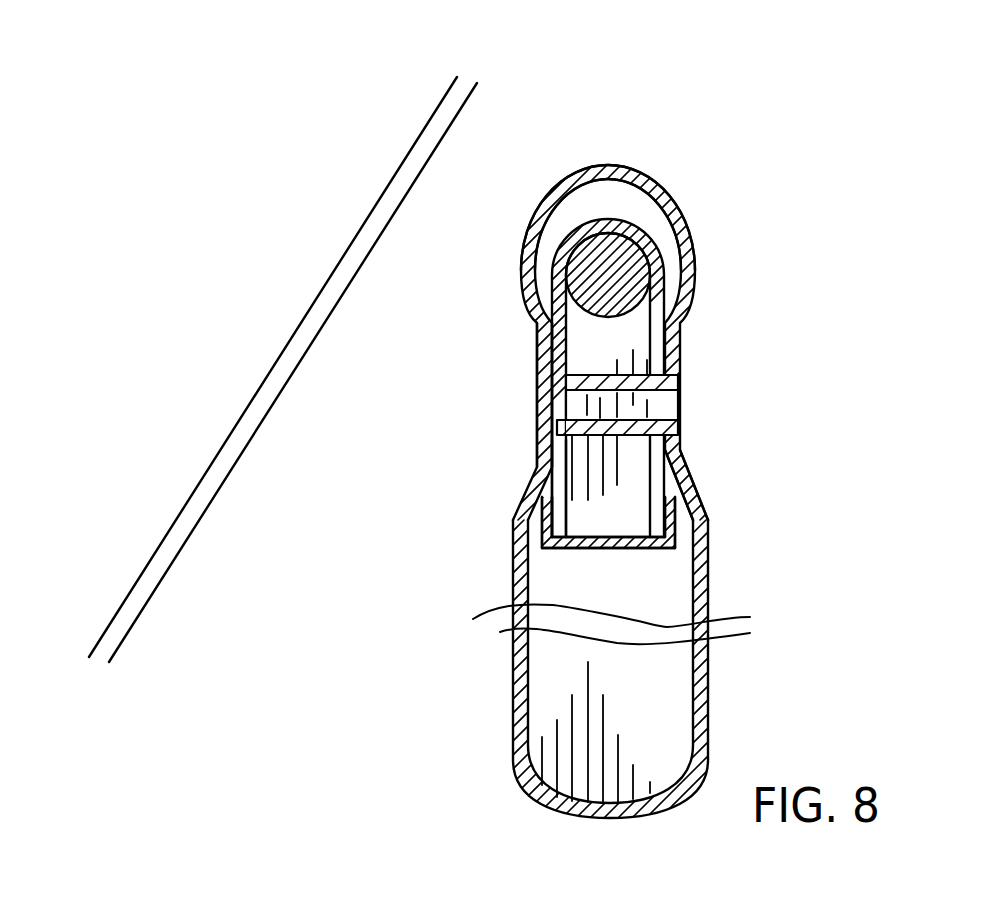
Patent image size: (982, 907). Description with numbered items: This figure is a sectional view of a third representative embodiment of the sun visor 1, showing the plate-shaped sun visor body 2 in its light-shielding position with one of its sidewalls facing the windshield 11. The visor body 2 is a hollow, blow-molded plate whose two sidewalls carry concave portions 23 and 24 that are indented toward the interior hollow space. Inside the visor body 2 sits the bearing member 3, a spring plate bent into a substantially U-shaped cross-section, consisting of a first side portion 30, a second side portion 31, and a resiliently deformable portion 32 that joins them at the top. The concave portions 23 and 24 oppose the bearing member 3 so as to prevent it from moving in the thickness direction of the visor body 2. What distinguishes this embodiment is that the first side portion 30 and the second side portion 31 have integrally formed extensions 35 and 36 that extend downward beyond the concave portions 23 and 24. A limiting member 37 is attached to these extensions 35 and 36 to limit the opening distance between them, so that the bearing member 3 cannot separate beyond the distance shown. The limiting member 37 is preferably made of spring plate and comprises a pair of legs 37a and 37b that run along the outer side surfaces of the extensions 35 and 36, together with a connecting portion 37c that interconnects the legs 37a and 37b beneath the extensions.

The sun visor 1 is at (680, 120).
The sun visor body 2 is at (500, 736).
The bearing member 3 is at (570, 207).
The windshield 11 is at (197, 503).
The concave portion 23 is at (667, 332).
The concave portion 24 is at (547, 328).
The first side portion 30 is at (670, 348).
The second side portion 31 is at (553, 358).
The resiliently deformable portion 32 is at (655, 192).
The extension 35 is at (687, 473).
The extension 36 is at (537, 467).
The limiting member 37 is at (633, 548).
The leg 37a is at (548, 521).
The leg 37b is at (675, 520).
The connecting portion 37c is at (597, 548).